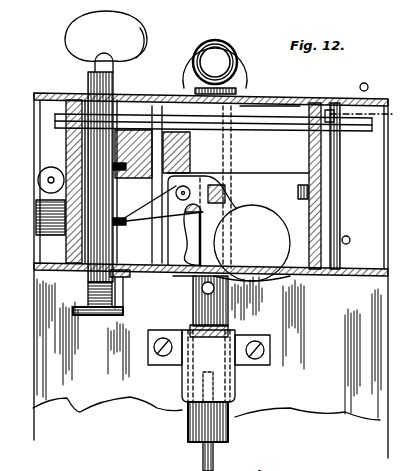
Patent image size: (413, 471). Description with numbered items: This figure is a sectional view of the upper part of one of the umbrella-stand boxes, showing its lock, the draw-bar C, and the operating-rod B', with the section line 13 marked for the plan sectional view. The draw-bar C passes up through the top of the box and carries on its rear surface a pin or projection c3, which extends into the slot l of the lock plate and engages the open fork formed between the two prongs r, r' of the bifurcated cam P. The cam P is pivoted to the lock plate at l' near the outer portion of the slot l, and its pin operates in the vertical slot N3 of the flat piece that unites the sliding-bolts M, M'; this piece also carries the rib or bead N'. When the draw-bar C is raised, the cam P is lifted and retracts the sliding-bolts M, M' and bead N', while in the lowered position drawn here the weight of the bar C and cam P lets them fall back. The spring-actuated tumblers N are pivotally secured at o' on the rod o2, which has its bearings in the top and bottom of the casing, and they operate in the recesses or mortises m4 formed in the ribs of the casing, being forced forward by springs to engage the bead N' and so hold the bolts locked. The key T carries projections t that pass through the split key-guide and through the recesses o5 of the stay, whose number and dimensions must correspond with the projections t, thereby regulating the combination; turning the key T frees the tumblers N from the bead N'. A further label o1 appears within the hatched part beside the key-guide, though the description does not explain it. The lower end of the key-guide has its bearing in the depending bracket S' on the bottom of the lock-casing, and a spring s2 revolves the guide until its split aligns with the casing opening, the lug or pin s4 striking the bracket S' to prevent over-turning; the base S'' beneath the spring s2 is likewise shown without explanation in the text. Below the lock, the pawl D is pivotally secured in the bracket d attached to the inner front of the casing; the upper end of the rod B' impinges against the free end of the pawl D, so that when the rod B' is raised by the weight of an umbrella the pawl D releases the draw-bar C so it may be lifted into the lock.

The key T is at (106, 146).
The rib or bead N' is at (211, 263).
The section line 13 is at (25, 70).
The draw-bar C is at (243, 93).
The recesses or mortises m4 is at (66, 118).
The pivot of the tumblers o' is at (348, 99).
The spring-actuated tumblers N is at (230, 187).
The sliding-bolt M' is at (270, 129).
The sliding-bolt M is at (50, 210).
The hatched block o1 is at (152, 154).
The projections on the key t is at (123, 198).
The recesses in the stay o5 is at (176, 188).
The slot in the plate l is at (187, 202).
The vertical slot N3 is at (228, 203).
The bifurcated cam P is at (229, 228).
The prong of the cam r is at (190, 234).
The prong of the cam r' is at (252, 294).
The rod o2 is at (330, 240).
The lug or pin s4 is at (125, 280).
The pivot of the cam l' is at (182, 288).
The depending bracket S' is at (57, 338).
The spring s2 is at (92, 295).
The spring base S'' is at (101, 343).
The pin or projection c3 is at (204, 292).
The pawl D is at (178, 364).
The bracket d is at (238, 383).
The rod B' is at (274, 372).